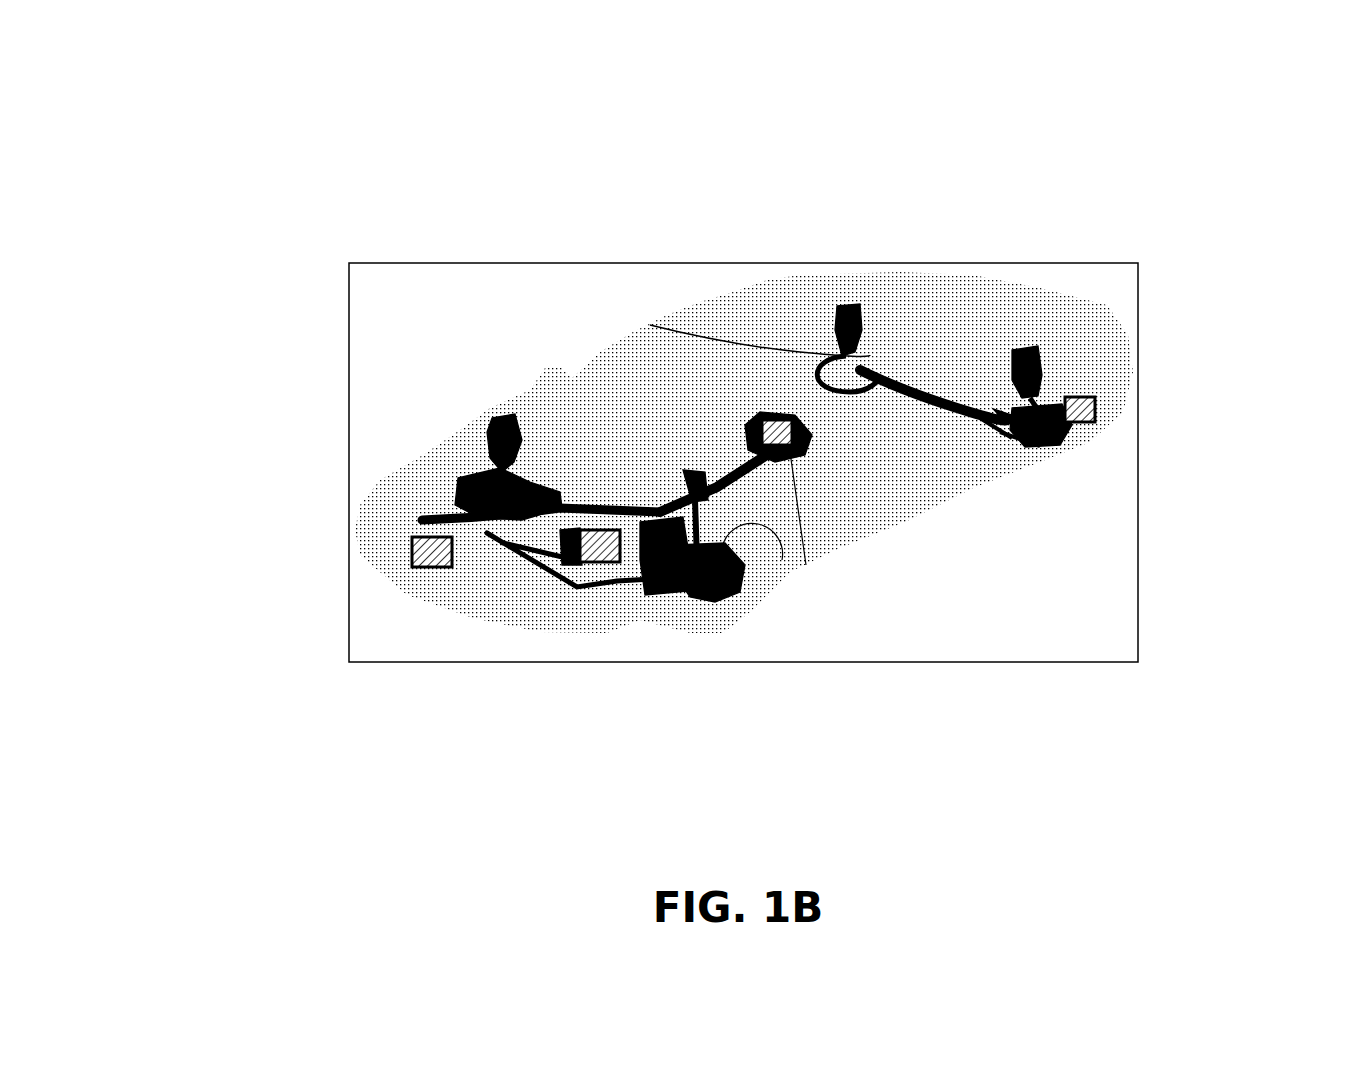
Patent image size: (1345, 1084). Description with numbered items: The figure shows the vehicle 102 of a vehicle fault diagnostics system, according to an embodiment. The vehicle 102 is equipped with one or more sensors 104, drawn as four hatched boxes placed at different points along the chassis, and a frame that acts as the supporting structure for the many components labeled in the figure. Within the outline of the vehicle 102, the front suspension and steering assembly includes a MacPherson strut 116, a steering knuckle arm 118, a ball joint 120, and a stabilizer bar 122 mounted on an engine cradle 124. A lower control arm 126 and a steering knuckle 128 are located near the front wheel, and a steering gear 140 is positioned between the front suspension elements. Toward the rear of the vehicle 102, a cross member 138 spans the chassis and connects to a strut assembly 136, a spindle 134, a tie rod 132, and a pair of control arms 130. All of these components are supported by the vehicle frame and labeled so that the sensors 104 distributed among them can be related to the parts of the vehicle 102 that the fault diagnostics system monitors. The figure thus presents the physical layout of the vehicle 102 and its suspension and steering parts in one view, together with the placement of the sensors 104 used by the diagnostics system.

The vehicle 102 is at (743, 331).
The sensors 104 is at (412, 556).
The MacPherson strut 116 is at (497, 415).
The steering knuckle arm 118 is at (497, 466).
The ball joint 120 is at (463, 498).
The stabilizer bar 122 is at (528, 555).
The engine cradle 124 is at (547, 570).
The lower control arm 126 is at (700, 592).
The steering knuckle 128 is at (738, 558).
The control arms 130 is at (982, 422).
The tie rod 132 is at (1027, 442).
The spindle 134 is at (1043, 402).
The strut assembly 136 is at (1022, 343).
The cross member 138 is at (879, 367).
The steering gear 140 is at (613, 510).